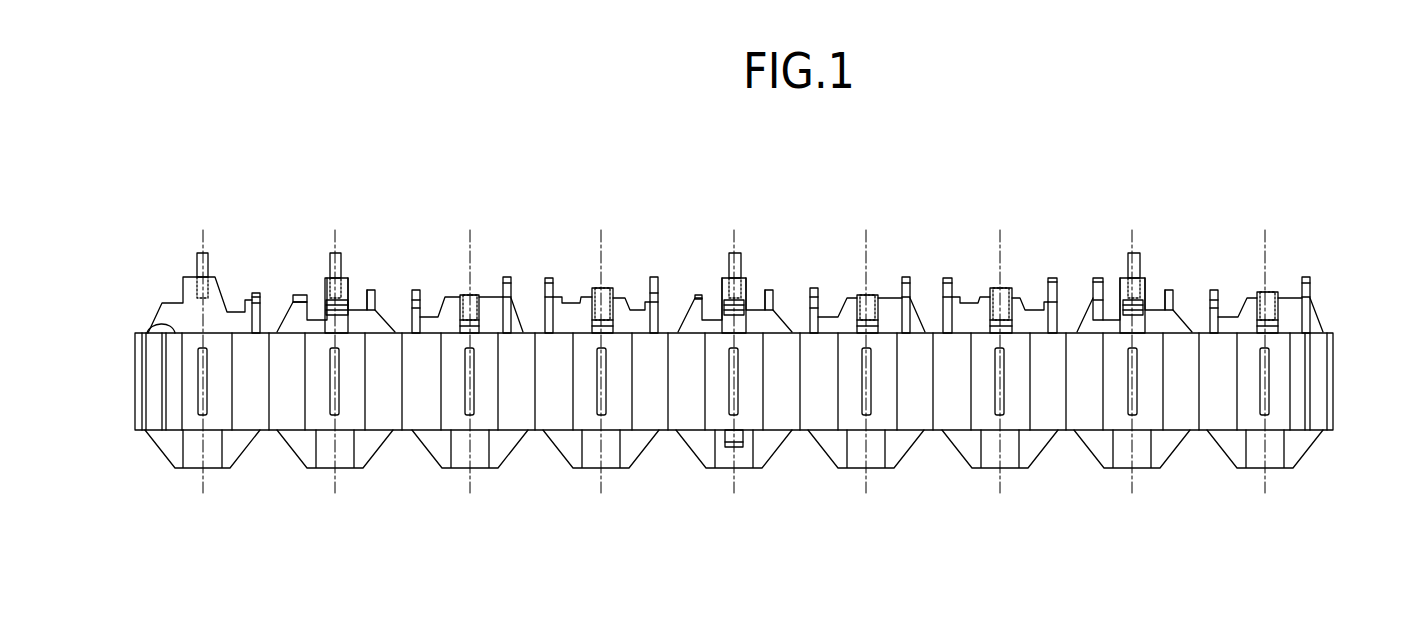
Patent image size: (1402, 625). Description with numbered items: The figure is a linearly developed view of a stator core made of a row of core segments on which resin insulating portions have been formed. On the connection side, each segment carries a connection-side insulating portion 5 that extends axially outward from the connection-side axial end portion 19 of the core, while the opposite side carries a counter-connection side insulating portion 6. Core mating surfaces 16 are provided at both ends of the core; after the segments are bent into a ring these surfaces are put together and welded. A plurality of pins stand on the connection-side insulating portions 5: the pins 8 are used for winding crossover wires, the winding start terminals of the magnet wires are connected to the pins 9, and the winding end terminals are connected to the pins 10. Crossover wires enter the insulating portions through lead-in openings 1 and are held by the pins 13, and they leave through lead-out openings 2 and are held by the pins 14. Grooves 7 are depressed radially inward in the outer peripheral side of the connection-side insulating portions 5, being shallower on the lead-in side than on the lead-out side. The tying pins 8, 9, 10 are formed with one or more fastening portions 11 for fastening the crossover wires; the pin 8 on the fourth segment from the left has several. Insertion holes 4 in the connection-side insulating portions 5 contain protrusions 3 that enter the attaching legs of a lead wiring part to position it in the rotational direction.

The lead-in opening 1 is at (305, 300).
The lead-out opening 2 is at (350, 305).
The protrusion 3 is at (337, 253).
The insertion hole 4 is at (466, 296).
The connection-side insulating portion 5 is at (158, 313).
The counter-connection side insulating portion 6 is at (162, 454).
The groove 7 is at (331, 316).
The pin 8 is at (256, 293).
The pin 9 is at (506, 278).
The pin 10 is at (548, 278).
The fastening portion 11 is at (262, 302).
The pin 13 is at (372, 290).
The pin 14 is at (300, 295).
The core mating surface 16 is at (135, 377).
The connection-side axial end portion 19 is at (147, 330).